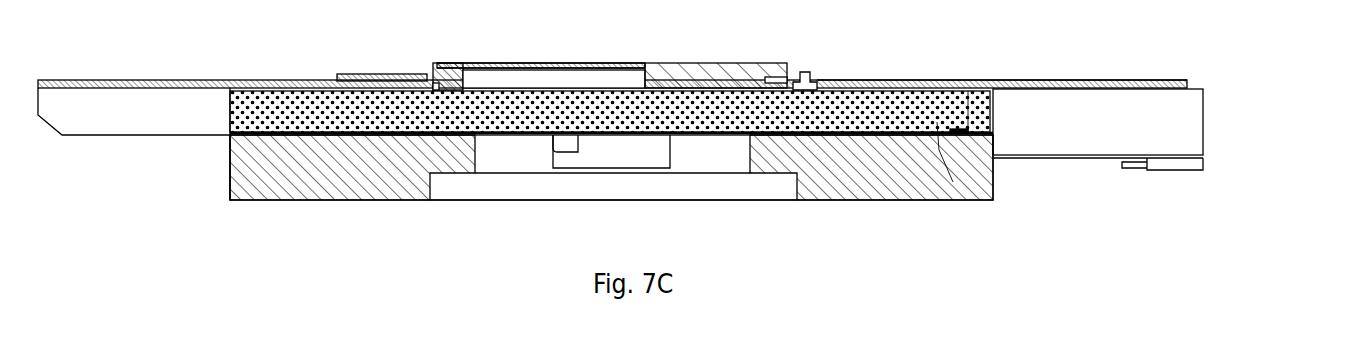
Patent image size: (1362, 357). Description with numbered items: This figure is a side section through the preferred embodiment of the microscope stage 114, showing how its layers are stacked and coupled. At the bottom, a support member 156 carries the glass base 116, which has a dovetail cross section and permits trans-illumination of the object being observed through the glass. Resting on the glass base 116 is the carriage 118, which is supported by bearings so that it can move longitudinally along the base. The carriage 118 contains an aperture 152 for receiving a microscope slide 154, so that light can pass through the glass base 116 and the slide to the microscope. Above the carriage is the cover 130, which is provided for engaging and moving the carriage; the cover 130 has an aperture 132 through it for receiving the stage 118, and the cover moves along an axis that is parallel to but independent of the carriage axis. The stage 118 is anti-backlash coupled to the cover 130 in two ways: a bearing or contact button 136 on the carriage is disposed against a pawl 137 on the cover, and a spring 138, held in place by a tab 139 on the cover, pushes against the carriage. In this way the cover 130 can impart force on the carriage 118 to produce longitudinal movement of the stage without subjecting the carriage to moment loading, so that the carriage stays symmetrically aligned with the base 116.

The microscope stage 114 is at (1226, 130).
The glass base 116 is at (968, 198).
The carriage 118 is at (740, 63).
The cover 130 is at (135, 78).
The aperture 132 is at (522, 85).
The contact button 136 is at (432, 68).
The pawl 137 is at (360, 76).
The spring 138 is at (812, 70).
The tab 139 is at (817, 77).
The aperture 152 is at (609, 58).
The microscope slide 154 is at (552, 63).
The support member 156 is at (242, 175).